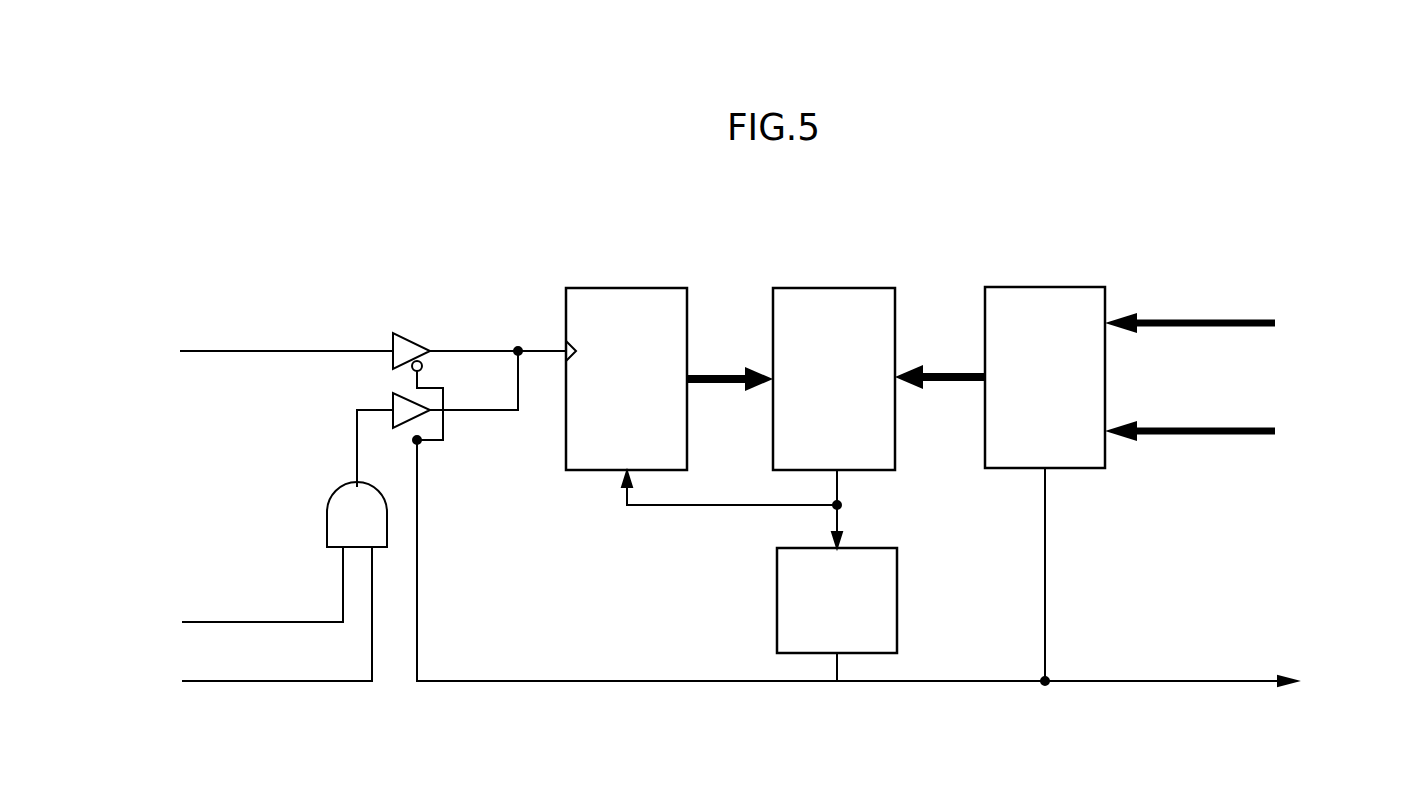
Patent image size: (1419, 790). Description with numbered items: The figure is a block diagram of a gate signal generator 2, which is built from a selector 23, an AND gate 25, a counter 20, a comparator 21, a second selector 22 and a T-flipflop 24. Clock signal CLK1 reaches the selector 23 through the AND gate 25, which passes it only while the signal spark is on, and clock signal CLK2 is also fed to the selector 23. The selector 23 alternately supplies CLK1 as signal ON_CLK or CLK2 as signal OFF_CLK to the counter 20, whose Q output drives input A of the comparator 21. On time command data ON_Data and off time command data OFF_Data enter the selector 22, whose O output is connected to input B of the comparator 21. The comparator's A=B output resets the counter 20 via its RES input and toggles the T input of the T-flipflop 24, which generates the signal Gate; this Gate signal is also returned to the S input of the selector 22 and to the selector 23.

The gate signal generator 2 is at (756, 488).
The counter 20 is at (627, 287).
The comparator 21 is at (844, 287).
The selector 22 is at (1043, 287).
The selector 23 is at (423, 327).
The T-flipflop 24 is at (777, 596).
The AND gate 25 is at (327, 527).